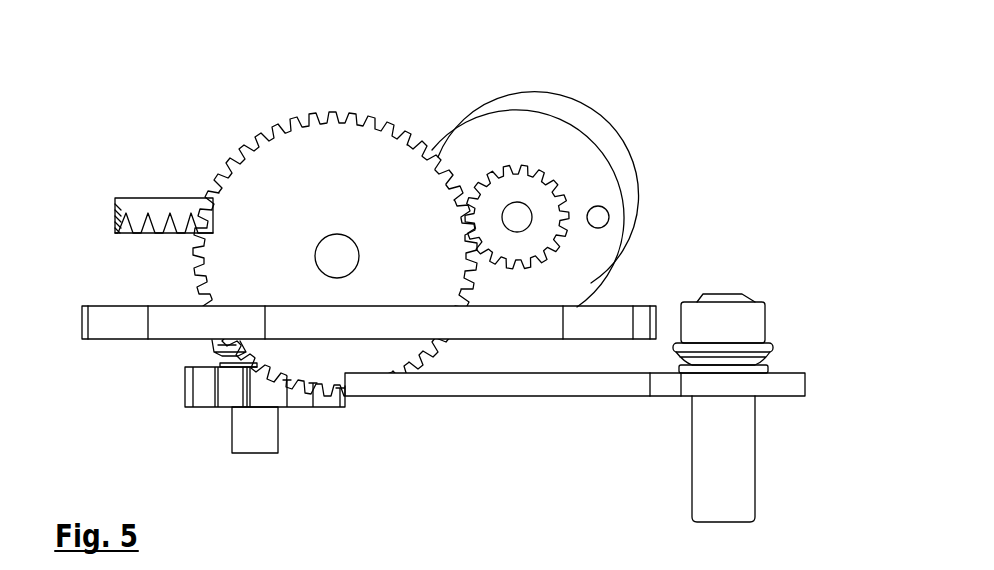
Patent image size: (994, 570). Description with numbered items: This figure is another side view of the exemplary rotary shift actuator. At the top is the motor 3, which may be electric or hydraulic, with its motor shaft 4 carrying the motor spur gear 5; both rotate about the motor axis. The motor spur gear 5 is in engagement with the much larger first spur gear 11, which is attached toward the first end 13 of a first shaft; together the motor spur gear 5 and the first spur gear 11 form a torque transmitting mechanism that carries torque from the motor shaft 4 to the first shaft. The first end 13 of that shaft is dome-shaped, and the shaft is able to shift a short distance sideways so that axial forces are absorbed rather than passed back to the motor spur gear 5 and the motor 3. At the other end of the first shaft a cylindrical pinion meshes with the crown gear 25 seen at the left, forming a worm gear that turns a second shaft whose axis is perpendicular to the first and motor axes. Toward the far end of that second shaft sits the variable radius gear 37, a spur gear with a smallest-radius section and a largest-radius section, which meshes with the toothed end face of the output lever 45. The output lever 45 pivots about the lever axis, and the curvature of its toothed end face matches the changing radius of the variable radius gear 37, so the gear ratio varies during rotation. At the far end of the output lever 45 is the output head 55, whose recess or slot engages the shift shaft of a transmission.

The motor 3 is at (567, 143).
The motor shaft 4 is at (516, 216).
The motor spur gear 5 is at (546, 208).
The first spur gear 11 is at (352, 199).
The first end of the first shaft 13 is at (343, 260).
The crown gear 25 is at (150, 208).
The variable radius gear 37 is at (232, 393).
The output lever 45 is at (598, 380).
The output head 55 is at (790, 380).